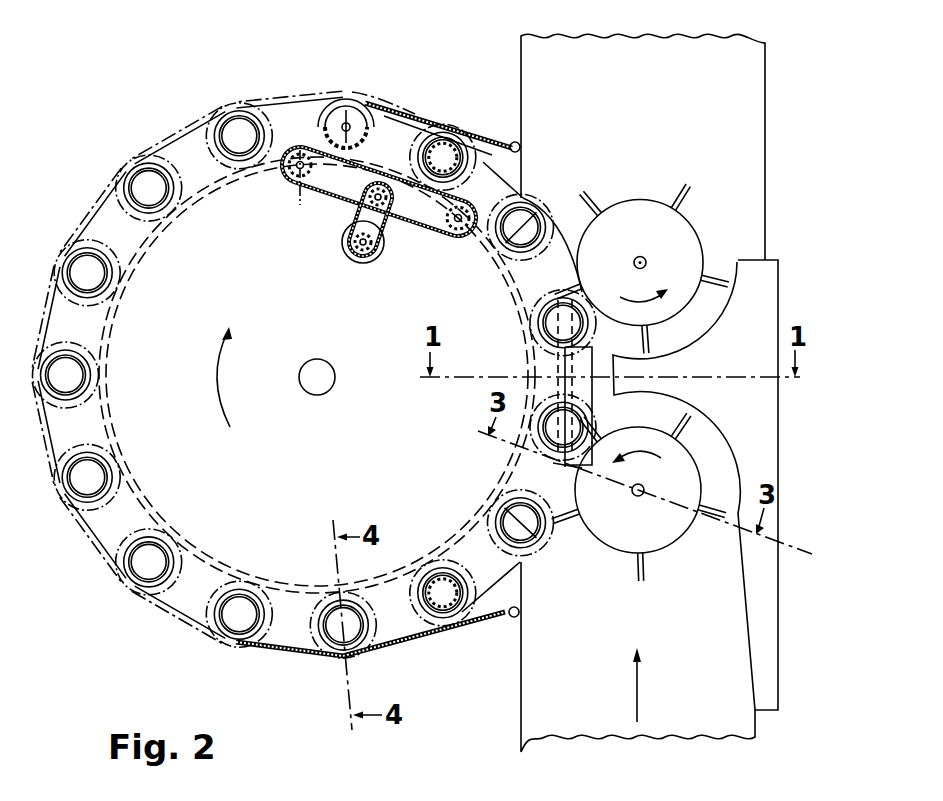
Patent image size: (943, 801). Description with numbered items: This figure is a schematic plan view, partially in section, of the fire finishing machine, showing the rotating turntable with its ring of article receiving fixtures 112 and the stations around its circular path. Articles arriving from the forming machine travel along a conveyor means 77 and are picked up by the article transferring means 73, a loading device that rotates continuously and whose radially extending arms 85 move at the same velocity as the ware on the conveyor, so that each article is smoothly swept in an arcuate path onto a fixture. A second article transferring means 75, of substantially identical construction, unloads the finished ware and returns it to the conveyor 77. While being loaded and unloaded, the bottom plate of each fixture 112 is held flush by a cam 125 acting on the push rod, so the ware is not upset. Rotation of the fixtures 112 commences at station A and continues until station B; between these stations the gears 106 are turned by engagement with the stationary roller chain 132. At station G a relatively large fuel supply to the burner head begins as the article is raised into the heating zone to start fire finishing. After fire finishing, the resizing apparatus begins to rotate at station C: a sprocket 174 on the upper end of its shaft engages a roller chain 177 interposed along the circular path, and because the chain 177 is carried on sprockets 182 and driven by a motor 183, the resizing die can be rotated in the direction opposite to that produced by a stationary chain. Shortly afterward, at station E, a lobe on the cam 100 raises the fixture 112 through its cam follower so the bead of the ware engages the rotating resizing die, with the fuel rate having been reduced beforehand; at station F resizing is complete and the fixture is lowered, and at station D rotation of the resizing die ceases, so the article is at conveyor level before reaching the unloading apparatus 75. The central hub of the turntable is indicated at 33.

The drum shaft 33 is at (331, 390).
The article transferring means 73 is at (674, 540).
The second article transferring means 75 is at (700, 237).
The conveyor means 77 is at (770, 181).
The radially extending arms 85 is at (677, 200).
The cam 100 is at (281, 587).
The gears 106 is at (141, 222).
The article receiving fixture 112 is at (464, 578).
The cam 125 is at (580, 397).
The stationary roller chain 132 is at (98, 203).
The sprocket 174 is at (325, 139).
The roller chain 177 is at (422, 160).
The sprockets 182 is at (290, 176).
The motor 183 is at (361, 263).
The station A is at (450, 608).
The station B is at (436, 170).
The station C is at (303, 220).
The station D is at (456, 221).
The station E is at (351, 99).
The station F is at (512, 238).
The station G is at (502, 509).